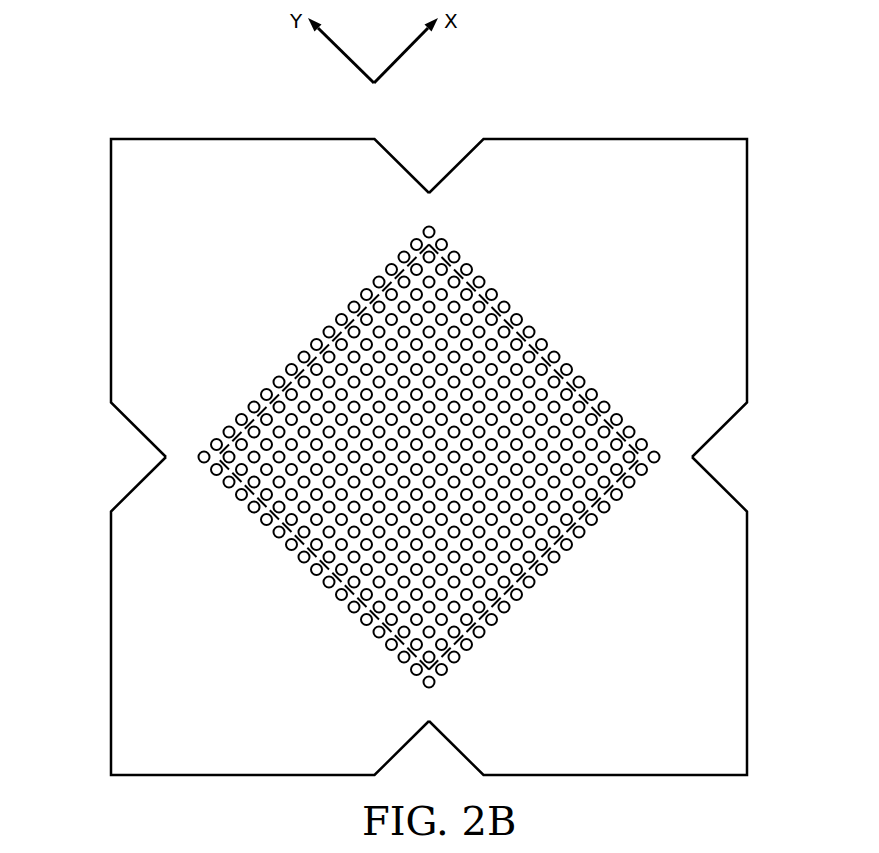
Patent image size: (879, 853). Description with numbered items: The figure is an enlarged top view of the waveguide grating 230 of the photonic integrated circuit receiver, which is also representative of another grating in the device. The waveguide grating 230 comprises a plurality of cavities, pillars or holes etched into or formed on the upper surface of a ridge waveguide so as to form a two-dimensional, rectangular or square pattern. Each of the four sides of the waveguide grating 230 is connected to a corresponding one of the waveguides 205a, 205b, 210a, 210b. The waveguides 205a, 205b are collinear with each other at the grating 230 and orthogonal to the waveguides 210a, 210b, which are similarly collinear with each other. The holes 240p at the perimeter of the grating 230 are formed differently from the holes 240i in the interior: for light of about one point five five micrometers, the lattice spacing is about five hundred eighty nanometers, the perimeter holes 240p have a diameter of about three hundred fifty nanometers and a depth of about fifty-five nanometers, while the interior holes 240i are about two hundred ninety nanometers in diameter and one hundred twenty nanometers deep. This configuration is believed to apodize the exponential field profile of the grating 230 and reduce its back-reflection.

The waveguide 205a is at (118, 270).
The waveguide 205b is at (741, 645).
The waveguide 210a is at (741, 270).
The waveguide 210b is at (118, 645).
The waveguide grating 230 is at (398, 446).
The interior holes 240i is at (345, 330).
The perimeter holes 240p is at (466, 268).